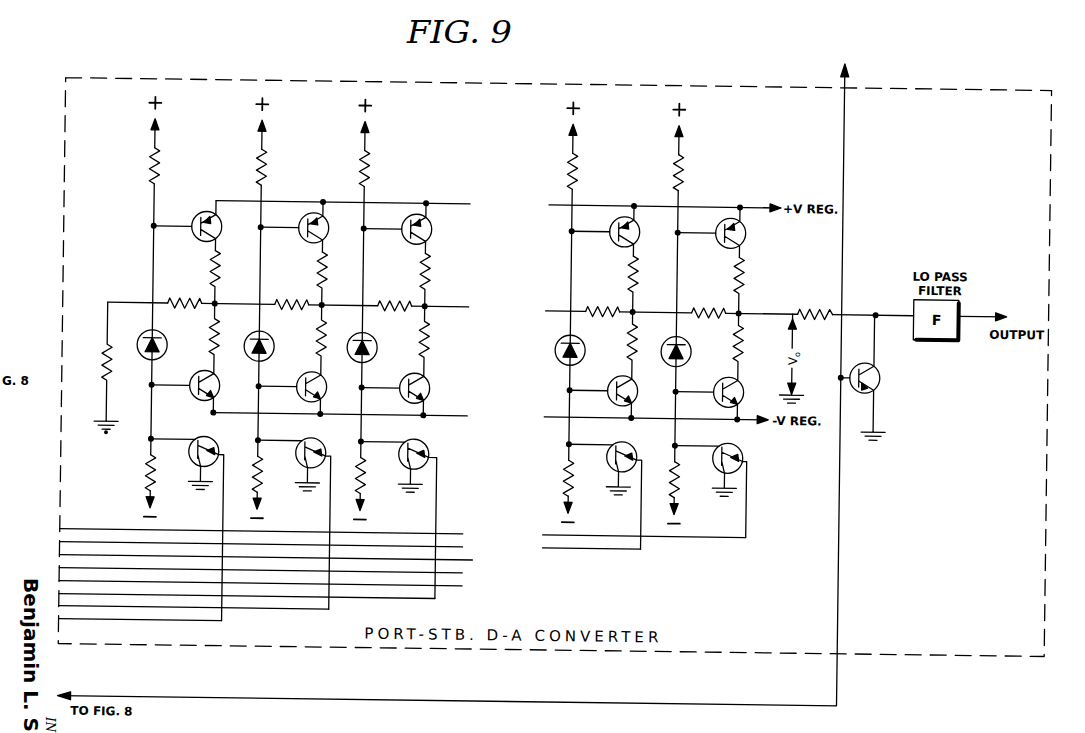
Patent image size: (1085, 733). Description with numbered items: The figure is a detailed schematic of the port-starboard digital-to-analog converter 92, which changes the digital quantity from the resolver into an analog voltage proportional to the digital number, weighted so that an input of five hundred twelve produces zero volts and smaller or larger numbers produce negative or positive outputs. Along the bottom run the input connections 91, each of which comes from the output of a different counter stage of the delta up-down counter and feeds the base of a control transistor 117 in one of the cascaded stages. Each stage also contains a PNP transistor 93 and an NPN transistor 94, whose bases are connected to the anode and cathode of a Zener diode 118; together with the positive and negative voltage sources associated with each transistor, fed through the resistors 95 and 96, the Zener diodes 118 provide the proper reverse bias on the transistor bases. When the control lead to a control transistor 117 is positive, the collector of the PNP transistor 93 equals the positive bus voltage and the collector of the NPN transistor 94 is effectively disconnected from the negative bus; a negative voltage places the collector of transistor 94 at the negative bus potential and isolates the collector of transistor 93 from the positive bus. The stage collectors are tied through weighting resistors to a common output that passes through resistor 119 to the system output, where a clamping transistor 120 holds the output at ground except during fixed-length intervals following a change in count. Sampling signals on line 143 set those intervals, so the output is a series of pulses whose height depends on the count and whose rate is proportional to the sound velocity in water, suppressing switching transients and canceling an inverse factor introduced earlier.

The D/A converter 92 is at (622, 83).
The resistor 95 is at (158, 162).
The PNP transistor 93 is at (216, 222).
The Zener diode 118 is at (163, 341).
The NPN transistor 94 is at (198, 402).
The control transistor 117 is at (204, 443).
The resistor 96 is at (149, 481).
The resistor 119 is at (814, 309).
The clamping transistor 120 is at (881, 376).
The line 143 is at (841, 528).
The input connections 91 is at (304, 613).